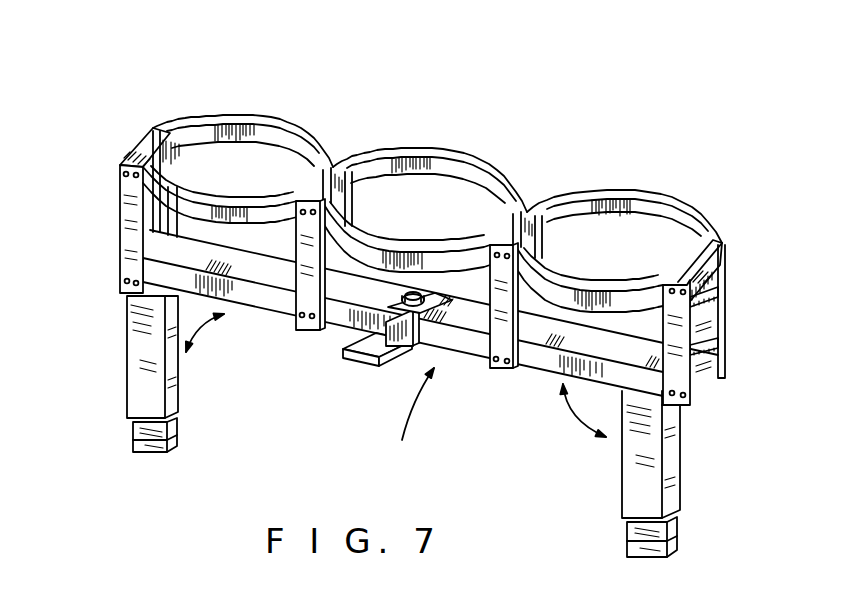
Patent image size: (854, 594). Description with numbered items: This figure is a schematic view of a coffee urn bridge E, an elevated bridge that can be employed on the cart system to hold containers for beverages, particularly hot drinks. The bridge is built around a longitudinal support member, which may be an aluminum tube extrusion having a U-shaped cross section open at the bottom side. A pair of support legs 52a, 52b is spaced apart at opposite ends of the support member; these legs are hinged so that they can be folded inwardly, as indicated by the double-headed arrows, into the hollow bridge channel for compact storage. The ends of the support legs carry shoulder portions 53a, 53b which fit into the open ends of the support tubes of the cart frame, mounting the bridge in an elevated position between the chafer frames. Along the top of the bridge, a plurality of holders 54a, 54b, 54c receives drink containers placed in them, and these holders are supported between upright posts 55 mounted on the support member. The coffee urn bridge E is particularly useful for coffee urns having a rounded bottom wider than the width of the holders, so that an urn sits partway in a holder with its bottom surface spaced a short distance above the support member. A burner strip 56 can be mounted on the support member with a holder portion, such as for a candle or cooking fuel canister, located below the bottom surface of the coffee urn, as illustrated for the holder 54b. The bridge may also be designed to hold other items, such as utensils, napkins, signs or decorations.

The holder 54a is at (235, 117).
The holder 54b is at (478, 162).
The holder 54c is at (617, 189).
The upright post 55 is at (331, 167).
The burner strip 56 is at (367, 366).
The support leg 52a is at (137, 380).
The support leg 52b is at (647, 482).
The shoulder portion 53a is at (140, 438).
The shoulder portion 53b is at (648, 541).
The coffee urn bridge E is at (395, 417).